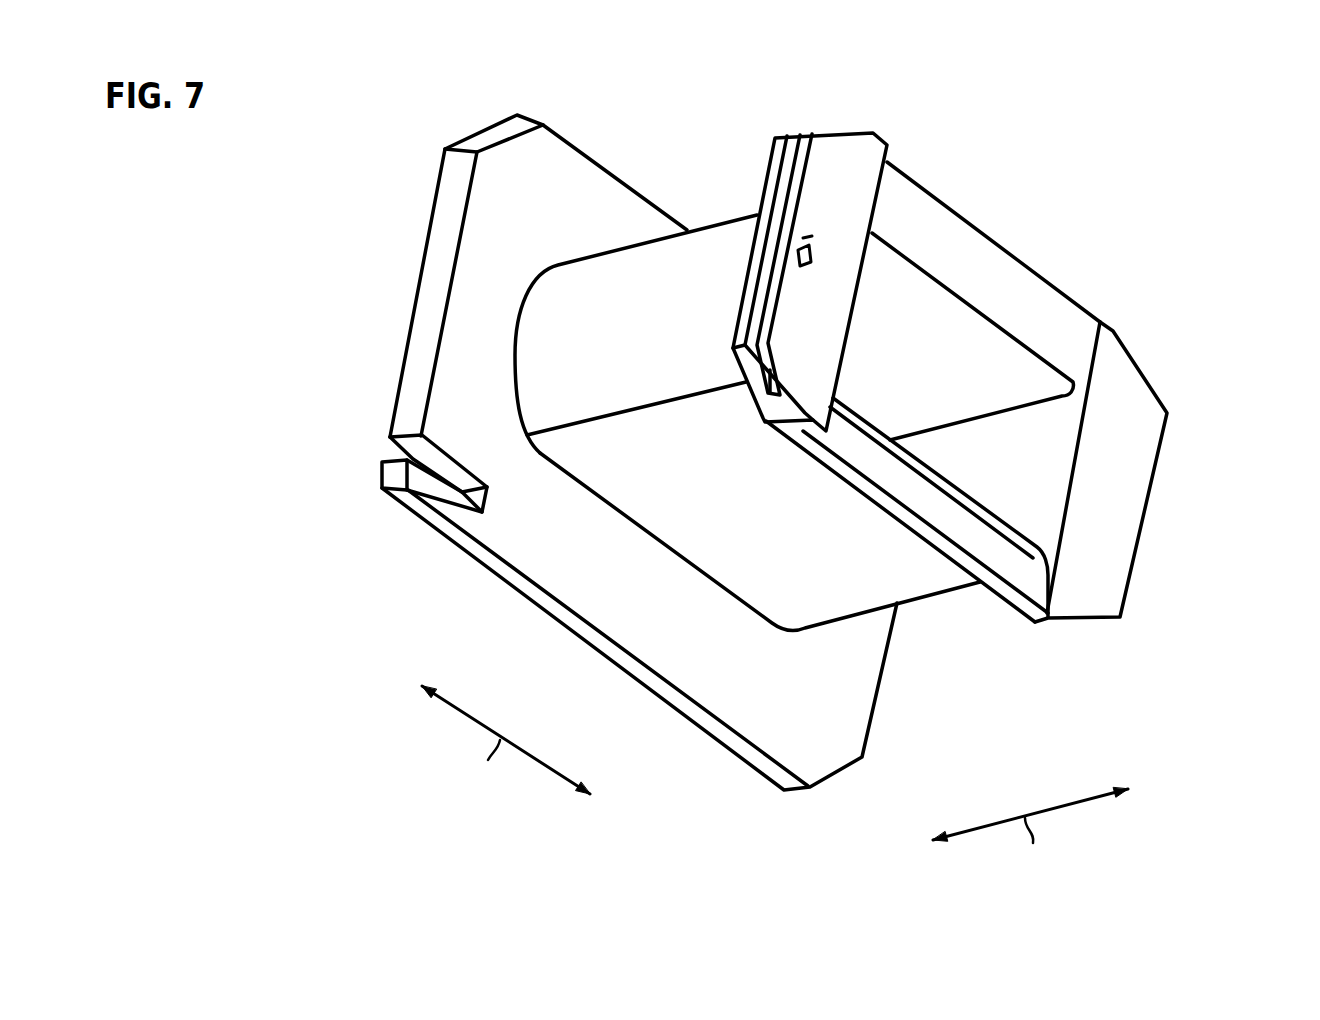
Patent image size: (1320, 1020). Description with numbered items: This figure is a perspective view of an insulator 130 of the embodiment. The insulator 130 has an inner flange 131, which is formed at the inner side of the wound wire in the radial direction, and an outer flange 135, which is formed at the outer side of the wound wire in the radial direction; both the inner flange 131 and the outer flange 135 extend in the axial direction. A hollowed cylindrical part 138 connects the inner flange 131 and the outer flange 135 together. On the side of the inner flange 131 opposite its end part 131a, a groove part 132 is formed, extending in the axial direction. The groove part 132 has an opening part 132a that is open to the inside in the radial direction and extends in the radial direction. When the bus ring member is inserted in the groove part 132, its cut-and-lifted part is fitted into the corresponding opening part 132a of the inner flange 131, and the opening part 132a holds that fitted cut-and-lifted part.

The insulator 130 is at (1037, 100).
The inner flange 131 is at (1075, 285).
The end part 131a is at (1122, 544).
The groove part 132 is at (778, 198).
The opening part 132a is at (806, 246).
The outer flange 135 is at (495, 108).
The hollowed cylindrical part 138 is at (917, 583).